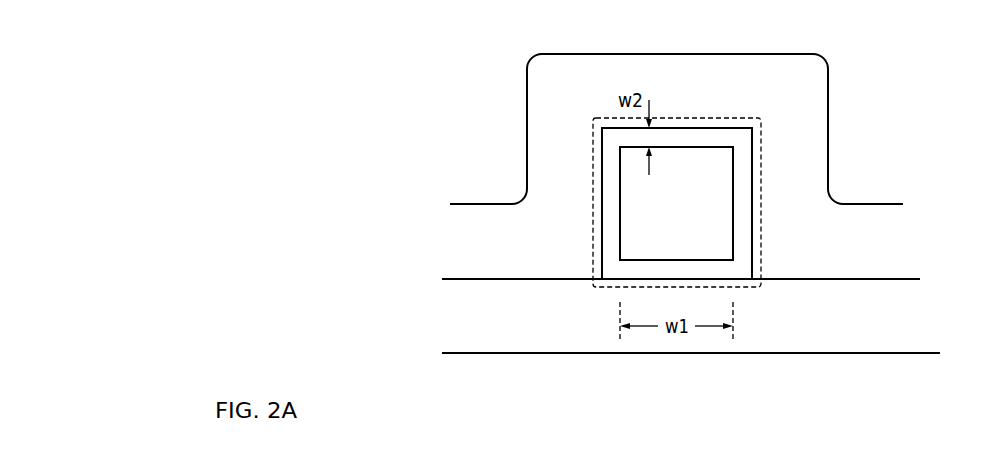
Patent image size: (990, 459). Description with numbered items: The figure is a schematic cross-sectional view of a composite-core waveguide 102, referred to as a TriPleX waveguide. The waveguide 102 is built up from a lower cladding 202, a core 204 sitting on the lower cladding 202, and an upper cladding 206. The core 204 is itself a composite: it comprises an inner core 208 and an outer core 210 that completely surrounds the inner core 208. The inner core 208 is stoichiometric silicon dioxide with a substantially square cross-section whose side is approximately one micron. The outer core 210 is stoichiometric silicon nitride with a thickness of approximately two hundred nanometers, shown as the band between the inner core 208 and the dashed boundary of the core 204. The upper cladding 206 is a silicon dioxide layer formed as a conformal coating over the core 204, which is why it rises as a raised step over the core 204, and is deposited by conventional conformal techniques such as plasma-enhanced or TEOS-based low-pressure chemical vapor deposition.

The waveguide 102 is at (442, 90).
The lower cladding 202 is at (514, 336).
The core 204 is at (695, 118).
The upper cladding 206 is at (516, 260).
The inner core 208 is at (667, 243).
The outer core 210 is at (740, 269).